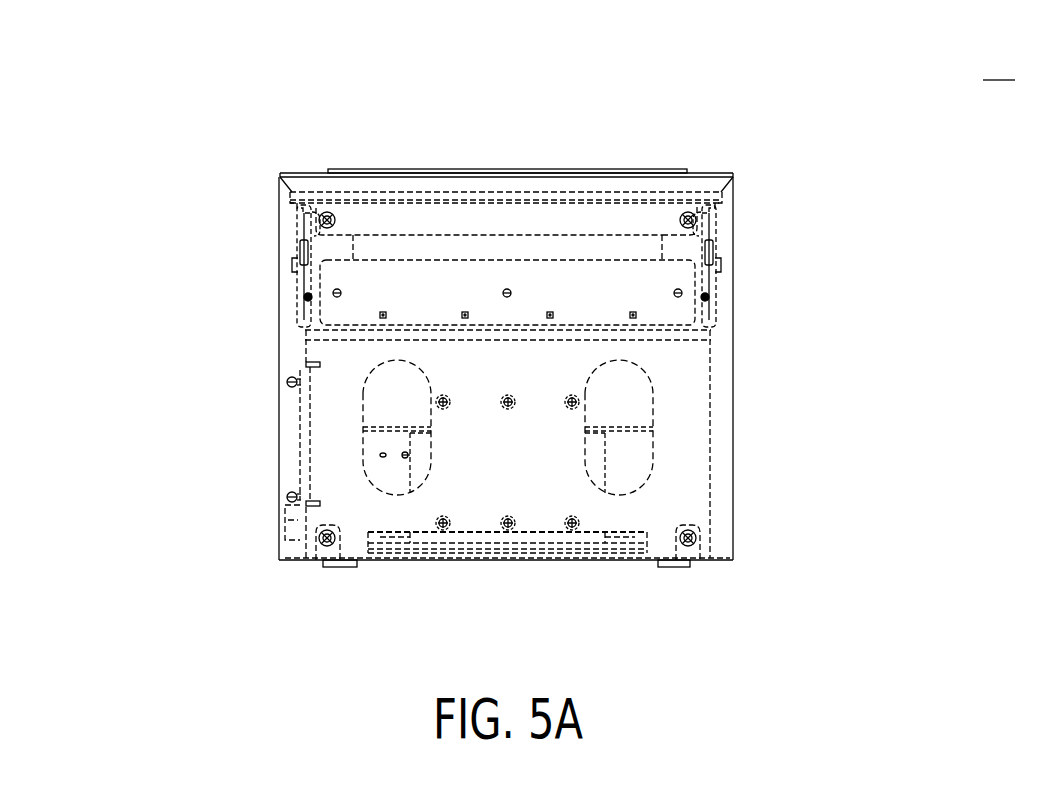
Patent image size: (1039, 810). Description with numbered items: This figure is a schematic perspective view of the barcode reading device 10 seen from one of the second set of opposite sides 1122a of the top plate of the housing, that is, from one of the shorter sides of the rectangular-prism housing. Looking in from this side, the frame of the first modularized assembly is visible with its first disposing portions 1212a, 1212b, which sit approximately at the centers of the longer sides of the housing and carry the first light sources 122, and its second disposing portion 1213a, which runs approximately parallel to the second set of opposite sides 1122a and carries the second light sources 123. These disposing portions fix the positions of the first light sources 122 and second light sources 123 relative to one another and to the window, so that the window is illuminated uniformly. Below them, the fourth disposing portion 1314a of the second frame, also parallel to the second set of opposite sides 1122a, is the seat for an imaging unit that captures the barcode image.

The barcode reading device 10 is at (647, 304).
The second set of opposite sides 1122a is at (702, 172).
The second disposing portion 1213a is at (423, 290).
The second light source 123 is at (551, 311).
The first disposing portion 1212b is at (303, 245).
The first disposing portion 1212a is at (717, 262).
The first light source 122 is at (707, 297).
The fourth disposing portion 1314a is at (483, 488).